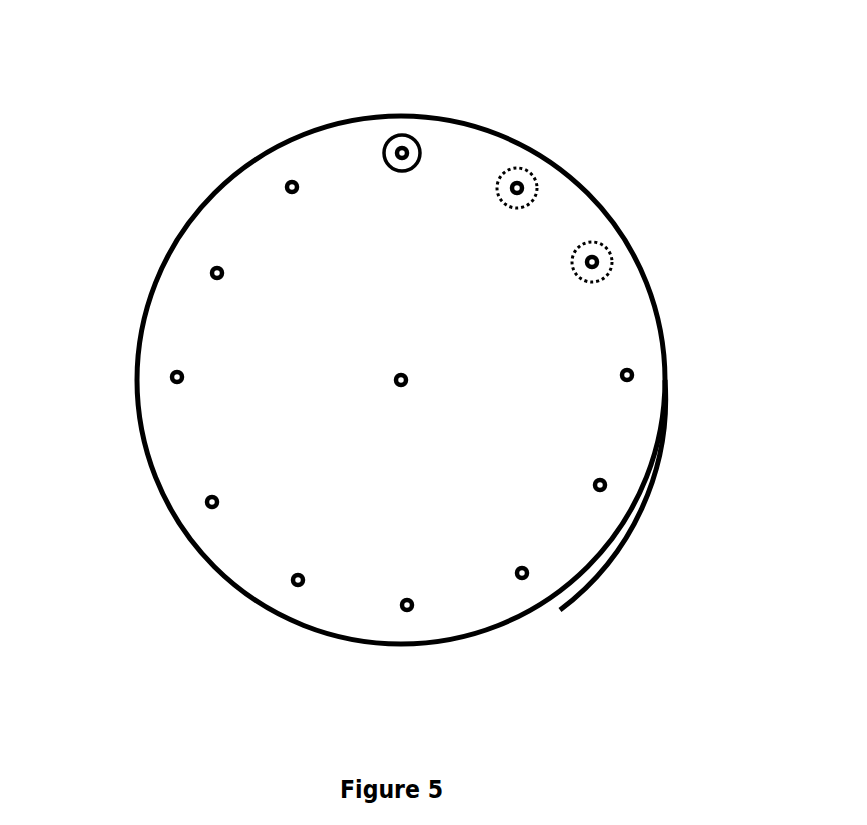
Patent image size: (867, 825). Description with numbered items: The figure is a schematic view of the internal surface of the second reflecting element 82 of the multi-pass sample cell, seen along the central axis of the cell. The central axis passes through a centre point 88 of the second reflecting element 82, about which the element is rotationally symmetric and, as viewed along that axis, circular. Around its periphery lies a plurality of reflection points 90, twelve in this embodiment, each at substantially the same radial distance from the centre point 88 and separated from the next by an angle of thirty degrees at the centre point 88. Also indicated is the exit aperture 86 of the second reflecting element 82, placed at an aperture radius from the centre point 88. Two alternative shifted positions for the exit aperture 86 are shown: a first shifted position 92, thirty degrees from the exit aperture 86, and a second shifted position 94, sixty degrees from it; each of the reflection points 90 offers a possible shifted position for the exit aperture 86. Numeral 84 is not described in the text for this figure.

The second reflecting element 82 is at (271, 138).
The perimeter holes 84 is at (402, 396).
The exit aperture 86 is at (423, 152).
The centre point 88 is at (390, 380).
The reflection points 90 is at (682, 373).
The first shifted position 92 is at (538, 184).
The second shifted position 94 is at (613, 260).